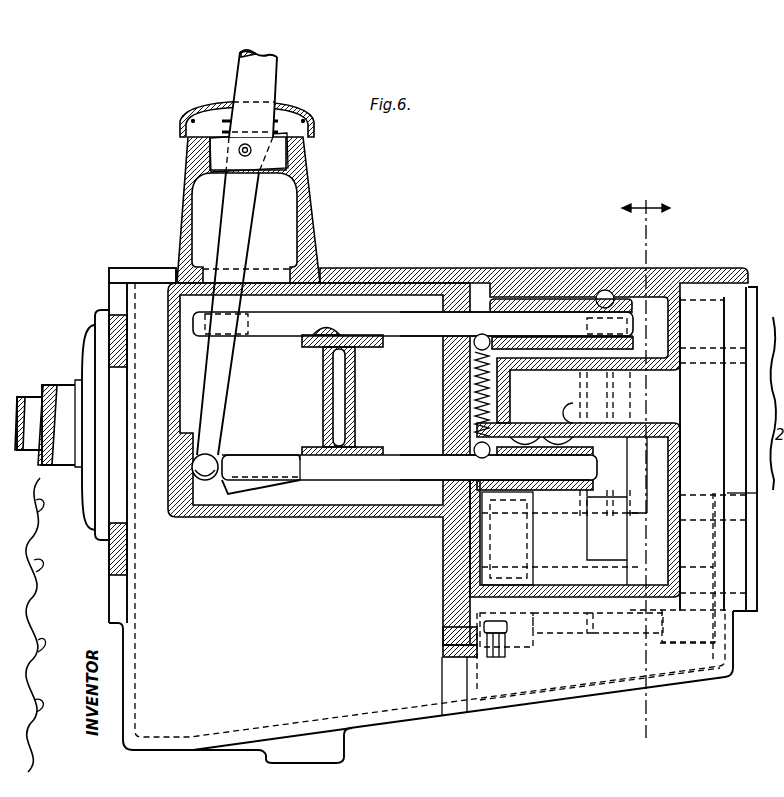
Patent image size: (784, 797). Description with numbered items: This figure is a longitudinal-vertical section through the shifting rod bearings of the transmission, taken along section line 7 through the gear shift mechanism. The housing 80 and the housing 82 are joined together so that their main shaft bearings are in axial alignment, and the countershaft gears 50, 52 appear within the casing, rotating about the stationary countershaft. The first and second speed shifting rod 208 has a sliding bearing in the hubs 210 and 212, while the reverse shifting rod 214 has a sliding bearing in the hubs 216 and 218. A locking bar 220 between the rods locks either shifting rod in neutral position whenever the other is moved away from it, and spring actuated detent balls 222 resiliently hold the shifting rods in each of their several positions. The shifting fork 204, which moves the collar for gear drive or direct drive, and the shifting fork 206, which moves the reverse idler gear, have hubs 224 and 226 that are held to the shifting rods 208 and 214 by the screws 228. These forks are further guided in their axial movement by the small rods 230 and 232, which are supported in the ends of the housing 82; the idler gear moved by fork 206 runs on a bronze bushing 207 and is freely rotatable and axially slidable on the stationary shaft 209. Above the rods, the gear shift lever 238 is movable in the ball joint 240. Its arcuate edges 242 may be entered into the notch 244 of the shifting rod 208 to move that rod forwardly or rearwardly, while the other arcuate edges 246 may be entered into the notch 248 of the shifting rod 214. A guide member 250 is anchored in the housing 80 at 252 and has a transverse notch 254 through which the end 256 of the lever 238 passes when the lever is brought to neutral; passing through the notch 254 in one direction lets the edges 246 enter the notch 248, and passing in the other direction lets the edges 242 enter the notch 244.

The section line of Fig. 7 is at (646, 474).
The countershaft gear 50 is at (522, 652).
The countershaft gear 52 is at (687, 654).
The housing 80 is at (412, 717).
The housing 82 is at (512, 705).
The shifting fork 204 is at (628, 325).
The shifting fork 206 is at (540, 622).
The bronze bushing 207 is at (598, 546).
The first and second speed shifting rod 208 is at (410, 327).
The stationary shaft 209 is at (736, 523).
The hub 210 is at (368, 344).
The hub 212 is at (512, 300).
The reverse shifting rod 214 is at (412, 478).
The hub 216 is at (351, 481).
The hub 218 is at (568, 446).
The locking bar 220 is at (346, 412).
The detent balls 222 is at (485, 457).
The hub of shifting fork 224 is at (561, 301).
The hub of shifting fork 226 is at (558, 436).
The screws 228 is at (607, 286).
The small rod 230 is at (700, 357).
The small rod 232 is at (688, 600).
The gear shift lever 238 is at (240, 237).
The ball joint 240 is at (269, 165).
The arcuate edges 242 is at (226, 324).
The notch 244 is at (247, 336).
The arcuate edges 246 is at (206, 454).
The notch 248 is at (252, 470).
The guide member 250 is at (250, 492).
The anchorage of guide member 252 is at (182, 470).
The transverse notch 254 is at (228, 457).
The end of lever 256 is at (198, 481).